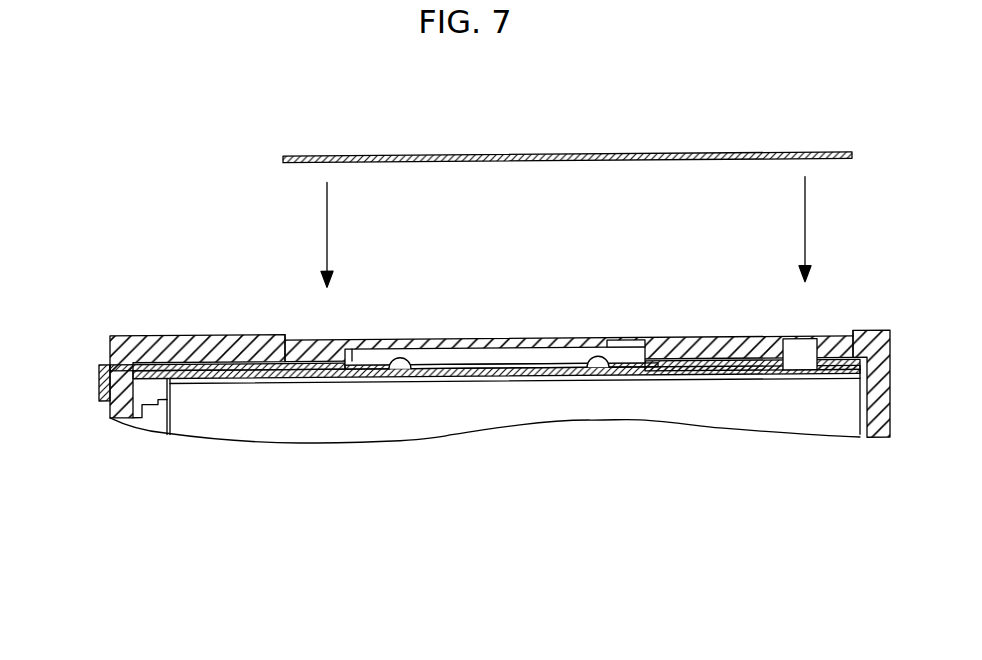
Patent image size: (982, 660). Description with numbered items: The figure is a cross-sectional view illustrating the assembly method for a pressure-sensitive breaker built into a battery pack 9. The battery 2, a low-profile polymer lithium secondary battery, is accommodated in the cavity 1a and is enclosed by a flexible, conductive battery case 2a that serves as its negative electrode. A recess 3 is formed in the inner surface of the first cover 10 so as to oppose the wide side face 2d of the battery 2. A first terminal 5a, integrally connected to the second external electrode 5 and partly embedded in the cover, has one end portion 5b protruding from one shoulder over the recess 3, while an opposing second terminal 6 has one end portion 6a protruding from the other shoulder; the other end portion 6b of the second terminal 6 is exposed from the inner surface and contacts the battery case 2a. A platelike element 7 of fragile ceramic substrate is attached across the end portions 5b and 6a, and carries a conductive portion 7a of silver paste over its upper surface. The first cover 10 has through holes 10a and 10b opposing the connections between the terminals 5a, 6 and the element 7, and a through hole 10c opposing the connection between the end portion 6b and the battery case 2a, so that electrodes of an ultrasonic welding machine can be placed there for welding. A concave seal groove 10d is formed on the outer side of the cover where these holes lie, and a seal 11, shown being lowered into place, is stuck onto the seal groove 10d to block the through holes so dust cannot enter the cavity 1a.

The cavity 1a is at (147, 397).
The battery 2 is at (311, 416).
The battery case 2a is at (468, 412).
The wide side face 2d is at (560, 391).
The recess 3 is at (522, 361).
The second external electrode 5 is at (98, 375).
The first terminal 5a is at (228, 362).
The one end portion 5b is at (410, 358).
The second terminal 6 is at (722, 351).
The one end portion 6a is at (592, 358).
The other end portion 6b is at (788, 374).
The element 7 is at (521, 377).
The conductive portion 7a is at (468, 364).
The battery pack 9 is at (110, 331).
The first cover 10 is at (150, 331).
The through hole 10a is at (370, 347).
The through hole 10b is at (626, 344).
The through hole 10c is at (800, 343).
The seal groove 10d is at (287, 337).
The seal 11 is at (628, 153).